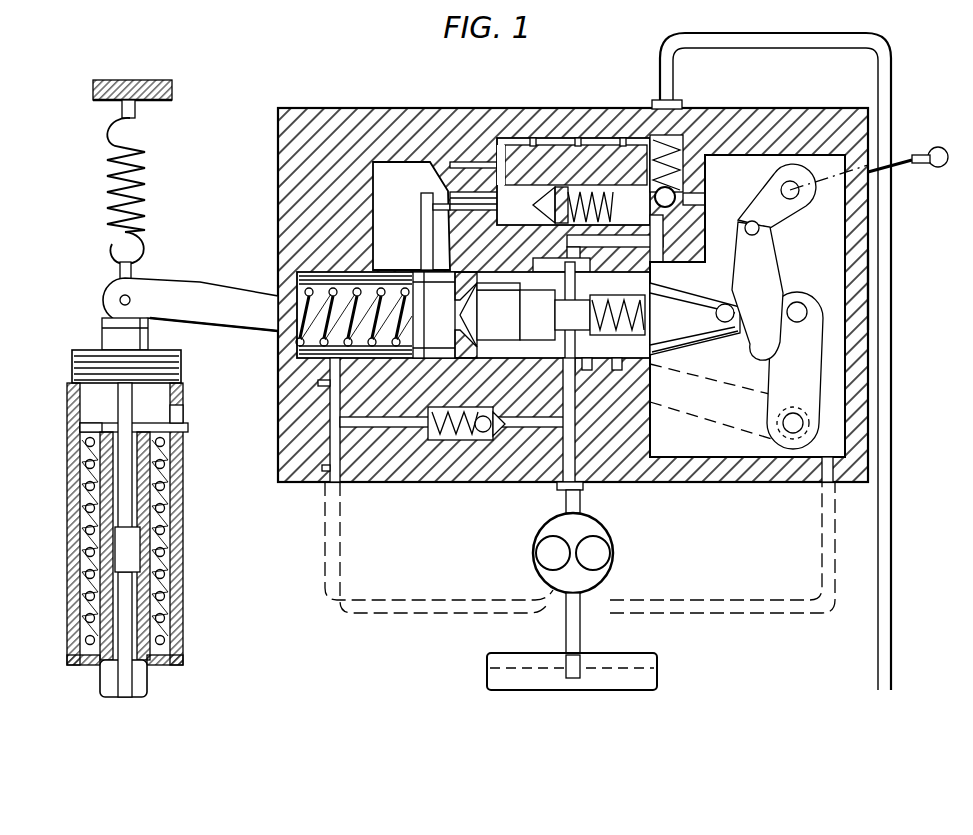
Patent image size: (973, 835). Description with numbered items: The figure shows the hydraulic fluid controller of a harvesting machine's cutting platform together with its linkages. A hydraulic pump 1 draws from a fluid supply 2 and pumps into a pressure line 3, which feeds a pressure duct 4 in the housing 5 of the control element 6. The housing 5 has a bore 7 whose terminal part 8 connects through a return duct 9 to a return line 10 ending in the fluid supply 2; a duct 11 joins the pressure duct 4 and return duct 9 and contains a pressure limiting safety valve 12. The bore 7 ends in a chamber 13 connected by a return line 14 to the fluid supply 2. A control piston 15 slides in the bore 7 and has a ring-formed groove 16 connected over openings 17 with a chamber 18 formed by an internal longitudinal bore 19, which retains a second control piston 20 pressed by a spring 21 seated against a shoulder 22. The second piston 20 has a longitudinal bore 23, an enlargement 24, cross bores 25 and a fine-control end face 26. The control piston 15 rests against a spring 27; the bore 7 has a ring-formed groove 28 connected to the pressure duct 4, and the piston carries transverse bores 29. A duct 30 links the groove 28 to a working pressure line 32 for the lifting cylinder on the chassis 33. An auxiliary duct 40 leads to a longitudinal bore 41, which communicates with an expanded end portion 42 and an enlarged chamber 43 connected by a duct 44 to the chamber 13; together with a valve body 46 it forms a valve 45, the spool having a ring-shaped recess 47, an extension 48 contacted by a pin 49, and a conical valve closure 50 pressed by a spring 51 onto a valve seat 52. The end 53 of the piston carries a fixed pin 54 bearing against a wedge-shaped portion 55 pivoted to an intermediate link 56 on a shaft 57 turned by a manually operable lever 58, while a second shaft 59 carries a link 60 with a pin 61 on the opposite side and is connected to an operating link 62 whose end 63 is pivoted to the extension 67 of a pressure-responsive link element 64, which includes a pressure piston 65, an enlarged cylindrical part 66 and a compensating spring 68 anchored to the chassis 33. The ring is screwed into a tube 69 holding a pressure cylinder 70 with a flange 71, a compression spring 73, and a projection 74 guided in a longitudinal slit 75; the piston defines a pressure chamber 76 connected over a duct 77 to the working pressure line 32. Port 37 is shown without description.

The hydraulic pump 1 is at (540, 565).
The fluid supply 2 is at (487, 668).
The pressure line 3 is at (560, 490).
The pressure duct 4 is at (582, 496).
The housing 5 is at (345, 482).
The control element 6 is at (332, 91).
The bore 7 is at (460, 360).
The terminal part 8 is at (328, 385).
The return duct 9 is at (330, 470).
The return line 10 is at (325, 560).
The duct 11 is at (455, 482).
The pressure limiting safety valve 12 is at (445, 440).
The chamber 13 is at (835, 320).
The return line 14 is at (805, 615).
The control piston 15 is at (385, 360).
The ring-formed groove 16 is at (485, 360).
The openings 17 is at (490, 335).
The chamber 18 is at (434, 315).
The internal longitudinal bore 19 is at (660, 348).
The second control piston 20 is at (533, 264).
The spring 21 is at (656, 296).
The shoulder 22 is at (645, 316).
The longitudinal bore 23 is at (587, 362).
The enlargement 24 is at (618, 364).
The cross bores 25 is at (556, 315).
The fine-control end face 26 is at (565, 440).
The spring 27 is at (330, 275).
The ring-formed groove 28 is at (540, 360).
The transverse bores 29 is at (565, 240).
The duct 30 is at (668, 255).
The working pressure line 32 is at (674, 78).
The chassis 33 is at (93, 95).
The port 37 is at (705, 197).
The auxiliary duct 40 is at (624, 138).
The longitudinal bore 41 is at (517, 186).
The expanded end portion 42 is at (372, 178).
The enlarged chamber 43 is at (577, 186).
The duct 44 is at (613, 210).
The valve 45 is at (500, 150).
The valve body 46 is at (450, 175).
The ring-shaped recess 47 is at (470, 192).
The extension 48 is at (425, 230).
The pin 49 is at (433, 207).
The conical valve closure 50 is at (579, 138).
The spring 51 is at (652, 155).
The valve seat 52 is at (534, 138).
The end 53 is at (727, 325).
The fixed pin 54 is at (760, 318).
The wedge-shaped portion 55 is at (777, 260).
The intermediate link 56 is at (798, 212).
The shaft 57 is at (786, 155).
The manually operable lever 58 is at (905, 170).
The second shaft 59 is at (825, 482).
The link 60 is at (775, 402).
The pin 61 is at (802, 330).
The operating link 62 is at (240, 290).
The end 63 is at (118, 280).
The pressure-responsive link element 64 is at (56, 495).
The pressure piston 65 is at (105, 445).
The enlarged cylindrical part 66 is at (95, 353).
The extension 67 is at (148, 328).
The compensating spring 68 is at (146, 186).
The tube 69 is at (165, 520).
The pressure cylinder 70 is at (148, 690).
The flange 71 is at (82, 425).
The compression spring 73 is at (88, 548).
The projection 74 is at (186, 430).
The longitudinal slit 75 is at (178, 412).
The pressure chamber 76 is at (137, 552).
The duct 77 is at (110, 690).